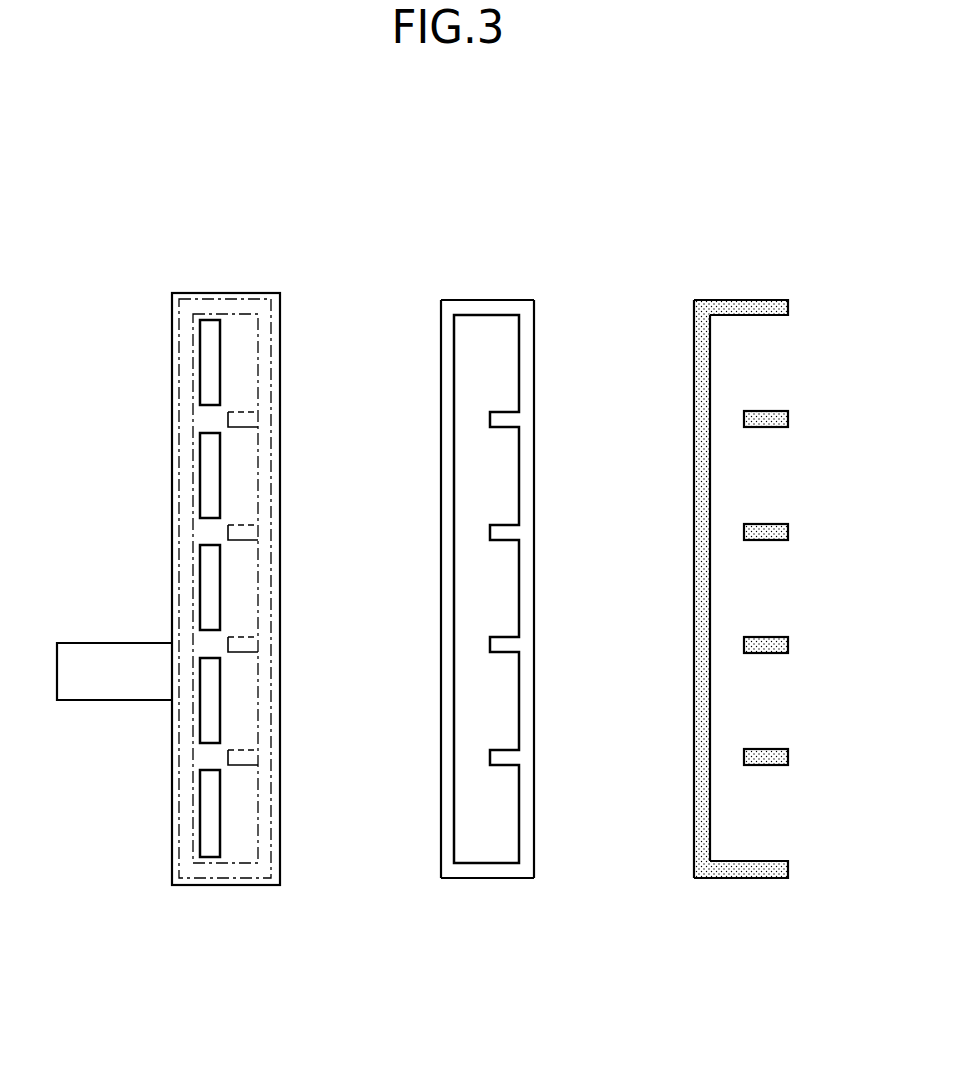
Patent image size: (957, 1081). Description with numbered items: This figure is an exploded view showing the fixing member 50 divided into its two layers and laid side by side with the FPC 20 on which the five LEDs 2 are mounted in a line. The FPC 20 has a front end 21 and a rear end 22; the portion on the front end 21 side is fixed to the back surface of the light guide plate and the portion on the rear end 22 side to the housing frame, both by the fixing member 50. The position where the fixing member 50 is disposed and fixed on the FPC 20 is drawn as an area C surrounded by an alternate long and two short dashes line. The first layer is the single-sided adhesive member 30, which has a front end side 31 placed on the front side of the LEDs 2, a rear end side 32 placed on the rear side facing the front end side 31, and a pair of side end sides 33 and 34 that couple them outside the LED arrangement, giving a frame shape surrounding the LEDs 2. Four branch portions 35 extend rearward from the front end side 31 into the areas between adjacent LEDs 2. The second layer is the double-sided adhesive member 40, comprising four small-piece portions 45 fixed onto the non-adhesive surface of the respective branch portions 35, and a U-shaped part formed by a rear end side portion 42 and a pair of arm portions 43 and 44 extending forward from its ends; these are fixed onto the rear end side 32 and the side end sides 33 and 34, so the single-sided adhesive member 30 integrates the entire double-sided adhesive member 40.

The FPC 20 is at (207, 285).
The front end 21 is at (281, 475).
The rear end 22 is at (172, 413).
The area C is at (248, 308).
The point light source 2 is at (208, 367).
The fixing member 50 is at (410, 165).
The single-sided adhesive member 30 is at (477, 290).
The front end side 31 is at (527, 373).
The rear end side 32 is at (450, 417).
The side end side 33 is at (500, 307).
The side end side 34 is at (491, 871).
The branch portion 35 is at (503, 422).
The double-sided adhesive member 40 is at (730, 290).
The rear end side portion 42 is at (701, 535).
The arm portion 43 is at (757, 307).
The arm portion 44 is at (746, 872).
The small-piece portion 45 is at (767, 417).